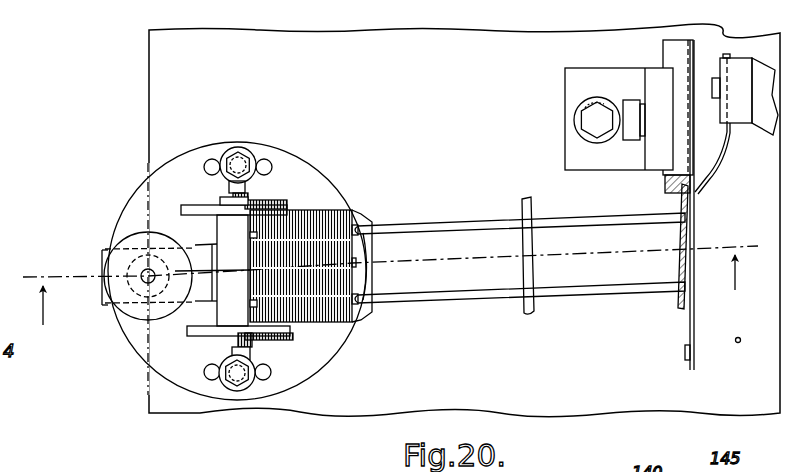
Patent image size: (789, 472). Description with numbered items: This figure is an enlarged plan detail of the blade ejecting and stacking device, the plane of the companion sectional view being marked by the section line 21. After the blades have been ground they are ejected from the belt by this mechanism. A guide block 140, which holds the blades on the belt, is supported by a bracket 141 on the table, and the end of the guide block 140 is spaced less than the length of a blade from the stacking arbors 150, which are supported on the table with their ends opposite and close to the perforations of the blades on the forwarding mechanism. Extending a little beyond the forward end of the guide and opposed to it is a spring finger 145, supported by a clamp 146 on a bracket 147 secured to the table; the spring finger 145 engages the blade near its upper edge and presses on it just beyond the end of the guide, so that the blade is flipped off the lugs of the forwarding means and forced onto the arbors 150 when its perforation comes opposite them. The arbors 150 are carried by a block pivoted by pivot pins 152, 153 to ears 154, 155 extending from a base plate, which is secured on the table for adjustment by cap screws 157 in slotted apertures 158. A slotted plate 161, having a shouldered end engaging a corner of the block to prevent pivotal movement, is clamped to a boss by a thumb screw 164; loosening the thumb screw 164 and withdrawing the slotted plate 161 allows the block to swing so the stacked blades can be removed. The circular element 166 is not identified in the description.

The section line 21 is at (382, 273).
The guide block 140 is at (663, 43).
The bracket 141 is at (565, 83).
The spring finger 145 is at (708, 190).
The clamp 146 is at (741, 57).
The bracket 147 is at (758, 133).
The stacking arbors 150 is at (510, 242).
The pivot pin 152 is at (244, 192).
The pivot pin 153 is at (290, 340).
The ear 154 is at (197, 205).
The ear 155 is at (190, 333).
The cap screws 157 is at (262, 392).
The slotted apertures 158 is at (252, 380).
The slotted plate 161 is at (102, 250).
The thumb screw 164 is at (125, 232).
The circular frame 166 is at (287, 147).